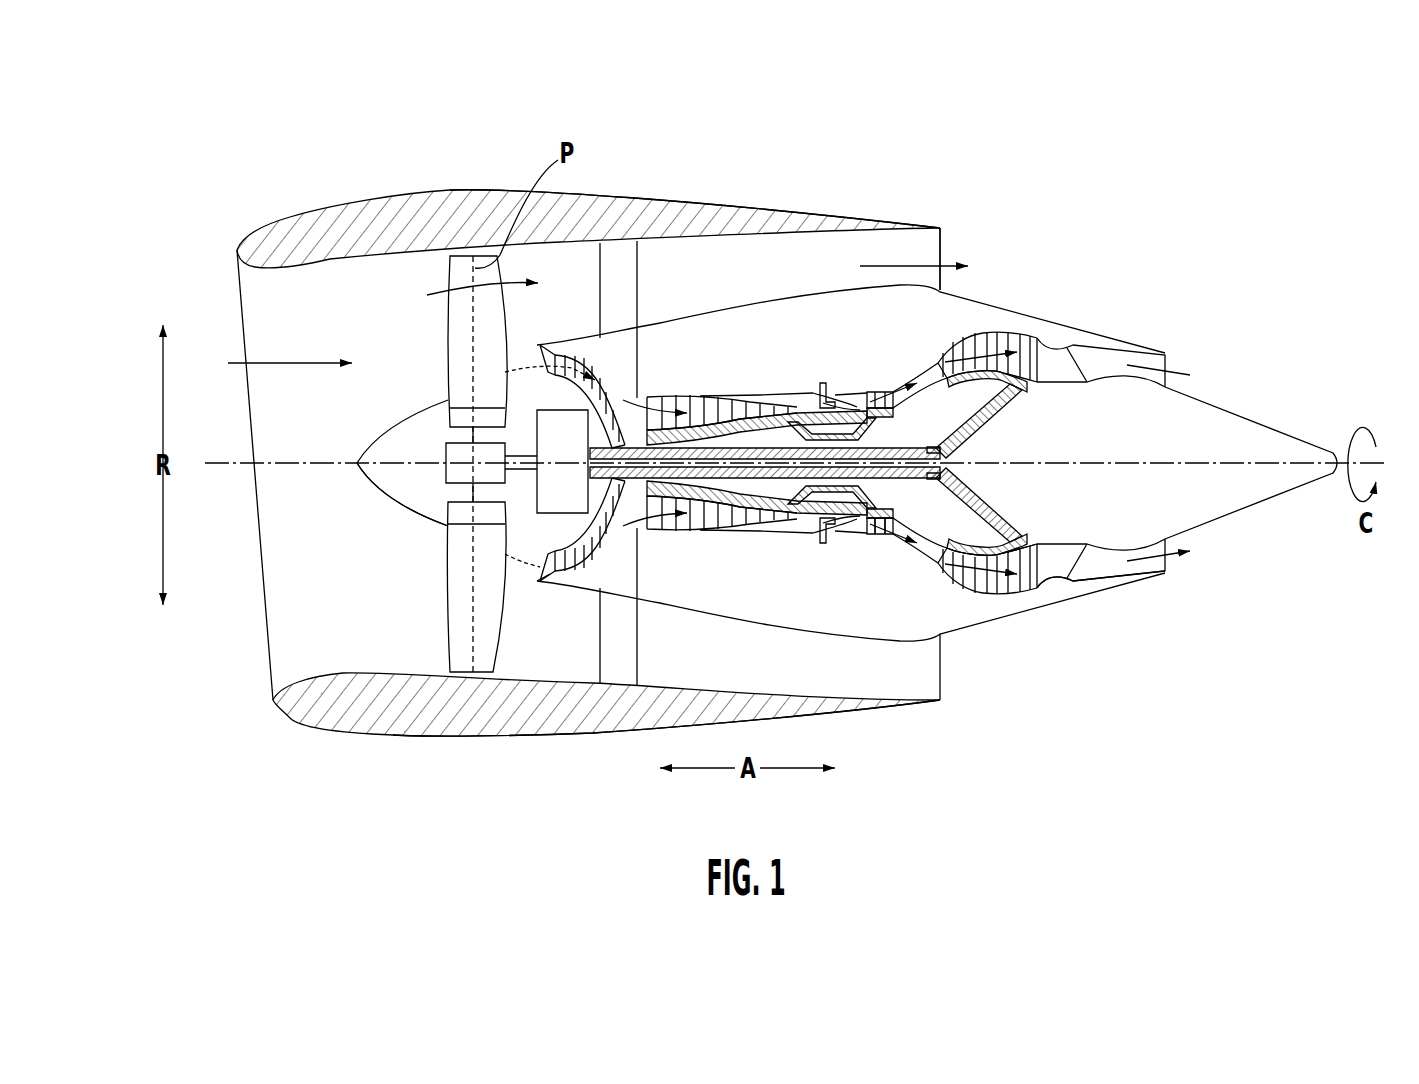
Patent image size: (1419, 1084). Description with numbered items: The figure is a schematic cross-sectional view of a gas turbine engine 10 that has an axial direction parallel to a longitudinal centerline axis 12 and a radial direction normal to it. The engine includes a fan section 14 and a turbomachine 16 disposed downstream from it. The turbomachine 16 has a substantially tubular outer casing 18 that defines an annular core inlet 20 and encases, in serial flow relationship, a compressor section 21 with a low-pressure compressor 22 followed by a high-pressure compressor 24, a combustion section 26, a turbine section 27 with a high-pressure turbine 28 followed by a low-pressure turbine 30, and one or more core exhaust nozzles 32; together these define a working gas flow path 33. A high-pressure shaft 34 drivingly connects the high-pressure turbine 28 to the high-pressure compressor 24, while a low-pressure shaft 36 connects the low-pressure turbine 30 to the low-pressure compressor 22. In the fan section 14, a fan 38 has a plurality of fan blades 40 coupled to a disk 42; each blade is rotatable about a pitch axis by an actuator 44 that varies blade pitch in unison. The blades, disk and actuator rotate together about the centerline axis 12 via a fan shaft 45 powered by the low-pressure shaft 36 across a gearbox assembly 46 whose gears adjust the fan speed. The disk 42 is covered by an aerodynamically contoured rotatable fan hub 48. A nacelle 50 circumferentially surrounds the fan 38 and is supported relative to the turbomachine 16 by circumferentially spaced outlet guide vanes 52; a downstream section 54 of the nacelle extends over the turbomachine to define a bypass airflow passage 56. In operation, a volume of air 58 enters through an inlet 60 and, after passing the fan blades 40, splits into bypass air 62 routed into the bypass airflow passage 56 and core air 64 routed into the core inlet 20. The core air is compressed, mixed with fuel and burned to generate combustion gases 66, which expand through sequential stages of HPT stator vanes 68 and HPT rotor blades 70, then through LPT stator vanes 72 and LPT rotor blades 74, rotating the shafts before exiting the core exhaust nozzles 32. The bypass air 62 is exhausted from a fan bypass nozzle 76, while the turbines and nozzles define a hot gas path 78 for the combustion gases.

The gas turbine engine 10 is at (1083, 207).
The longitudinal centerline axis 12 is at (1107, 461).
The fan section 14 is at (492, 172).
The turbomachine 16 is at (741, 343).
The outer casing 18 is at (780, 622).
The annular core inlet 20 is at (548, 570).
The compressor section 21 is at (660, 392).
The low-pressure compressor 22 is at (598, 545).
The high-pressure compressor 24 is at (670, 528).
The combustion section 26 is at (836, 531).
The turbine section 27 is at (893, 372).
The high-pressure turbine 28 is at (900, 530).
The low-pressure turbine 30 is at (1015, 601).
The core exhaust nozzles 32 is at (1079, 586).
The working gas flow path 33 is at (920, 557).
The high-pressure shaft 34 is at (853, 433).
The low-pressure shaft 36 is at (960, 427).
The fan 38 is at (412, 513).
The fan blades 40 is at (448, 600).
The disk 42 is at (463, 422).
The actuator 44 is at (447, 445).
The fan shaft 45 is at (522, 455).
The gearbox assembly 46 is at (585, 370).
The fan hub 48 is at (363, 477).
The nacelle 50 is at (490, 740).
The outlet guide vanes 52 is at (637, 283).
The downstream section of the nacelle 54 is at (882, 215).
The bypass airflow passage 56 is at (826, 272).
The volume of air 58 is at (288, 362).
The inlet 60 is at (272, 676).
The bypass air 62 is at (463, 292).
The core air 64 is at (530, 357).
The combustion gases 66 is at (985, 340).
The HPT stator vanes 68 is at (853, 533).
The HPT rotor blades 70 is at (872, 537).
The LPT stator vanes 72 is at (943, 578).
The LPT rotor blades 74 is at (957, 578).
The fan bypass nozzle 76 is at (930, 250).
The hot gas path 78 is at (925, 368).